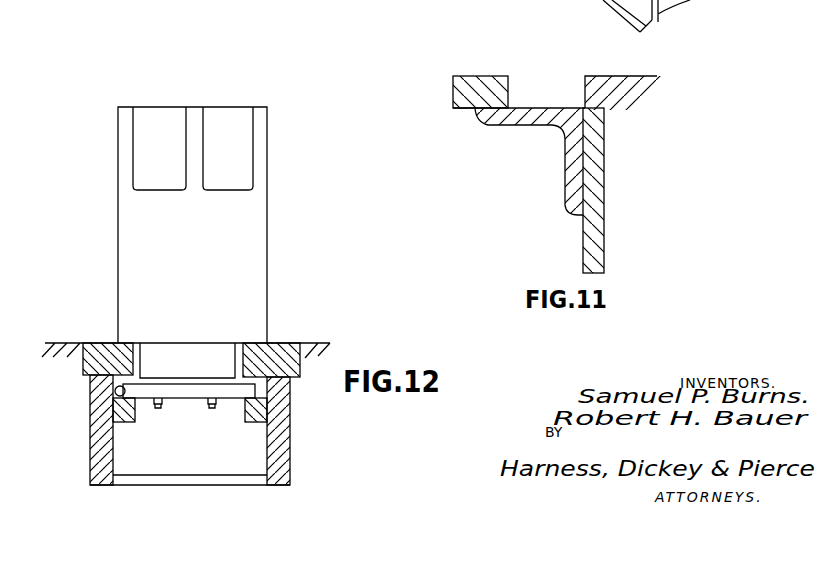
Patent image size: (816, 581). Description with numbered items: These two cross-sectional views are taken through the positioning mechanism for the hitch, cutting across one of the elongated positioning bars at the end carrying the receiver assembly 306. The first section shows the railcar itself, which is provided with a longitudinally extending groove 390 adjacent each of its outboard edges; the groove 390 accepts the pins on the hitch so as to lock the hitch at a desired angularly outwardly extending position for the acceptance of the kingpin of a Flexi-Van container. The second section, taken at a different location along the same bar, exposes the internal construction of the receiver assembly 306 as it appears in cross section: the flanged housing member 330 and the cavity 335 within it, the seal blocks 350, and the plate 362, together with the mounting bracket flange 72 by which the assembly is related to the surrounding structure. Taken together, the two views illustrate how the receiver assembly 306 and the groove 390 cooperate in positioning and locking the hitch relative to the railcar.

In FIG. 11, the mounting bracket flange 72 is at (632, 74).
In FIG. 11, the longitudinally extending groove 390 is at (527, 108).
In FIG. 12, the receiver assembly 306 is at (268, 222).
In FIG. 12, the flanged housing member 330 is at (138, 365).
In FIG. 12, the plate 362 is at (185, 352).
In FIG. 12, the seal blocks 350 is at (115, 392).
In FIG. 12, the cavity 335 is at (187, 395).